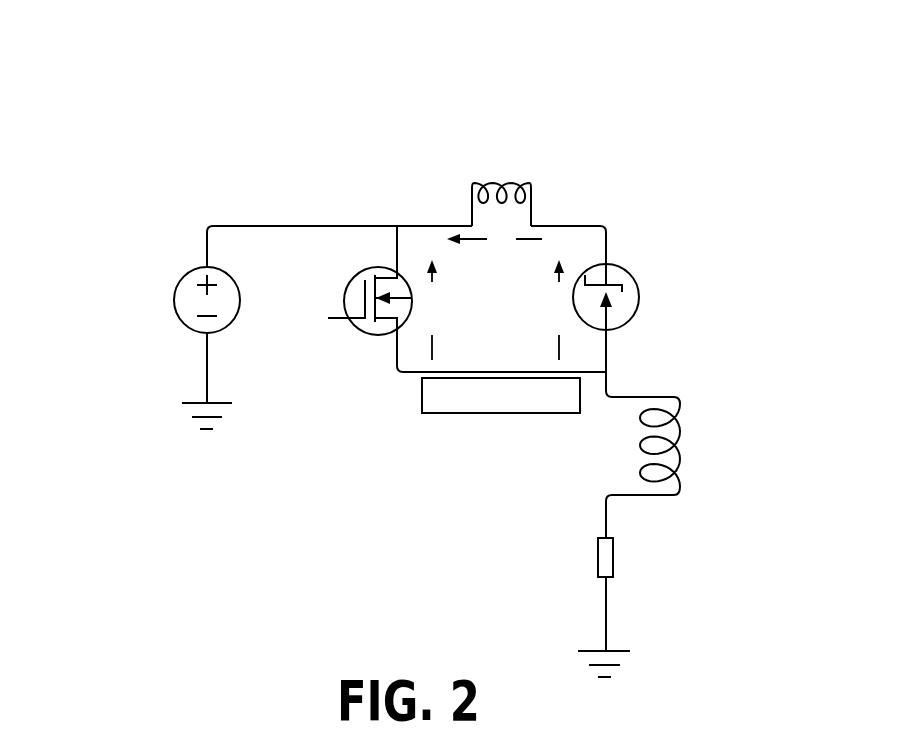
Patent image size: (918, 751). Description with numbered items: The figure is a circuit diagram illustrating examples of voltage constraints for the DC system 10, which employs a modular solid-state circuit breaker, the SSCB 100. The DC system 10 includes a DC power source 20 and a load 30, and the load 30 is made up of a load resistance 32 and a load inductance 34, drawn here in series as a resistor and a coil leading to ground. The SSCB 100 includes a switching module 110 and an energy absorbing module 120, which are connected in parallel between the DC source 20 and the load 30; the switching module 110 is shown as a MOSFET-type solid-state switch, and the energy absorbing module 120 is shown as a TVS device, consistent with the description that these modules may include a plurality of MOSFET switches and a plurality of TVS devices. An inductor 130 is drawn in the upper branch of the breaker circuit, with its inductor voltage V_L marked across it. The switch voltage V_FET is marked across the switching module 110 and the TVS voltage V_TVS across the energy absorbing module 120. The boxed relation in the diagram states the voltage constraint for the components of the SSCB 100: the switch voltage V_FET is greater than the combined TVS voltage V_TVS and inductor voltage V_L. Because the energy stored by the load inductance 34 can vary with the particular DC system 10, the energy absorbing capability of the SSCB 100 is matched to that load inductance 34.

The DC system 10 is at (185, 144).
The DC power source 20 is at (177, 287).
The load 30 is at (421, 479).
The load resistance 32 is at (597, 565).
The load inductance 34 is at (672, 418).
The SSCB 100 is at (671, 348).
The switching module 110 is at (362, 330).
The energy absorbing module 120 is at (621, 268).
The inductor 130 is at (511, 183).